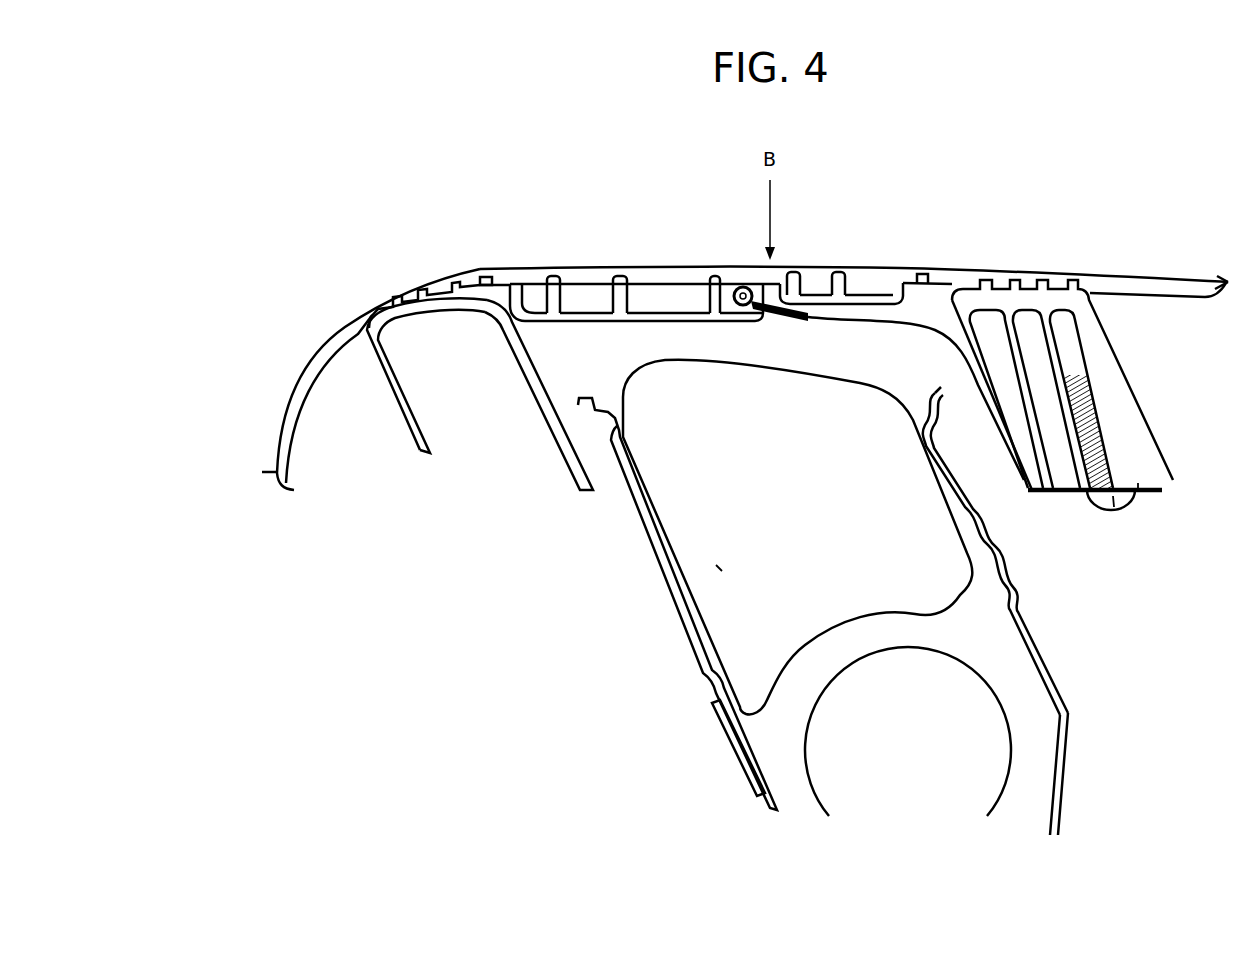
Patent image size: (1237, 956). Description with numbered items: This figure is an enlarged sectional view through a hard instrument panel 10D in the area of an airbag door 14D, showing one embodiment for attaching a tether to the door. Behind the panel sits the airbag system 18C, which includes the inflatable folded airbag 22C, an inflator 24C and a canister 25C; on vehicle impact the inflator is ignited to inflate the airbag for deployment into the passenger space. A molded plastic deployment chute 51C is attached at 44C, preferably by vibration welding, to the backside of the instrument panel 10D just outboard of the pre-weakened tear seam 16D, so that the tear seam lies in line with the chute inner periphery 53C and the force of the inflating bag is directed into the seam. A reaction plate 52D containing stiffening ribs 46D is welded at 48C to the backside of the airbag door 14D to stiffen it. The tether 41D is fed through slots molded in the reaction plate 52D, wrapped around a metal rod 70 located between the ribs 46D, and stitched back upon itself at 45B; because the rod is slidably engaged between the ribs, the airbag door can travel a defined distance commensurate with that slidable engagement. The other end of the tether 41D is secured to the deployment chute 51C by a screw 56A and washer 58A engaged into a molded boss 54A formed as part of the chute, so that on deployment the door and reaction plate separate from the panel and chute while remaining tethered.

The hard instrument panel 10D is at (266, 416).
The airbag door 14D is at (573, 278).
The tear seam 16D is at (481, 260).
The attachment weld 44C is at (393, 296).
The reaction plate weld 48C is at (618, 283).
The ribs 46D is at (717, 283).
The metal rod 70 is at (741, 287).
The tether stitching 45B is at (783, 323).
The tether 41D is at (877, 322).
The reaction plate 52D is at (565, 322).
The chute inner periphery 53C is at (532, 330).
The deployment chute 51C is at (538, 420).
The molded boss 54A is at (1078, 376).
The washer 58A is at (1080, 496).
The screw 56A is at (1137, 500).
The airbag 22C is at (1010, 593).
The canister 25C is at (1068, 727).
The airbag system 18C is at (1098, 800).
The inflator 24C is at (995, 812).